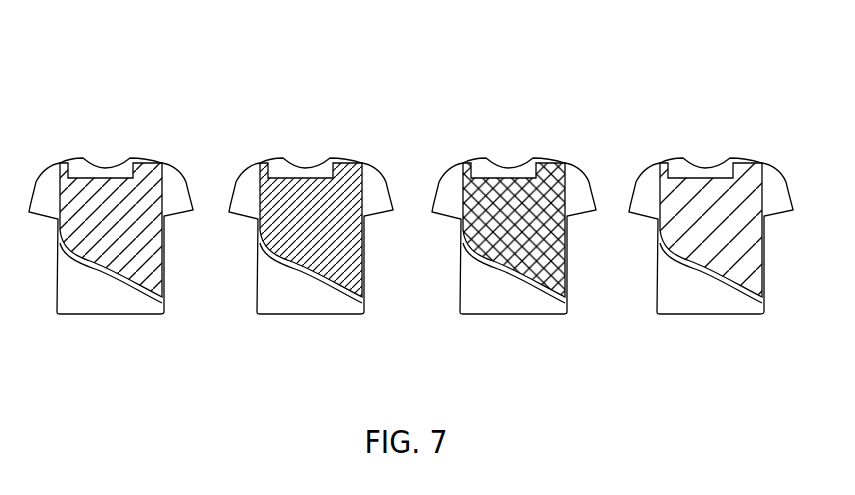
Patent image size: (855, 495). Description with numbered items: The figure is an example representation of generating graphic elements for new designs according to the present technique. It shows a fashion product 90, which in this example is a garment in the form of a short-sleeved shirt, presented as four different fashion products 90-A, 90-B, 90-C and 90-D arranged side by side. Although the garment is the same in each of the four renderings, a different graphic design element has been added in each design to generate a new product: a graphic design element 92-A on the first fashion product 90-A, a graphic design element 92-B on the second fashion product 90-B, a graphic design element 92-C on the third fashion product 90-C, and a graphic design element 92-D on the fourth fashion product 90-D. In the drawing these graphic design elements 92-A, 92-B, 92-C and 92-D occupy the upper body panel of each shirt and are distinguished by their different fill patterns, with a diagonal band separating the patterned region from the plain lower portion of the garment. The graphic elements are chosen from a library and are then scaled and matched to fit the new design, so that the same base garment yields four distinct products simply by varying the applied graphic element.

The fashion product 90 is at (691, 52).
The fashion product 90-A is at (110, 166).
The fashion product 90-B is at (315, 166).
The fashion product 90-C is at (522, 166).
The fashion product 90-D is at (721, 166).
The graphic design element 92-A is at (47, 257).
The graphic design element 92-B is at (311, 306).
The graphic design element 92-C is at (514, 306).
The graphic design element 92-D is at (711, 306).